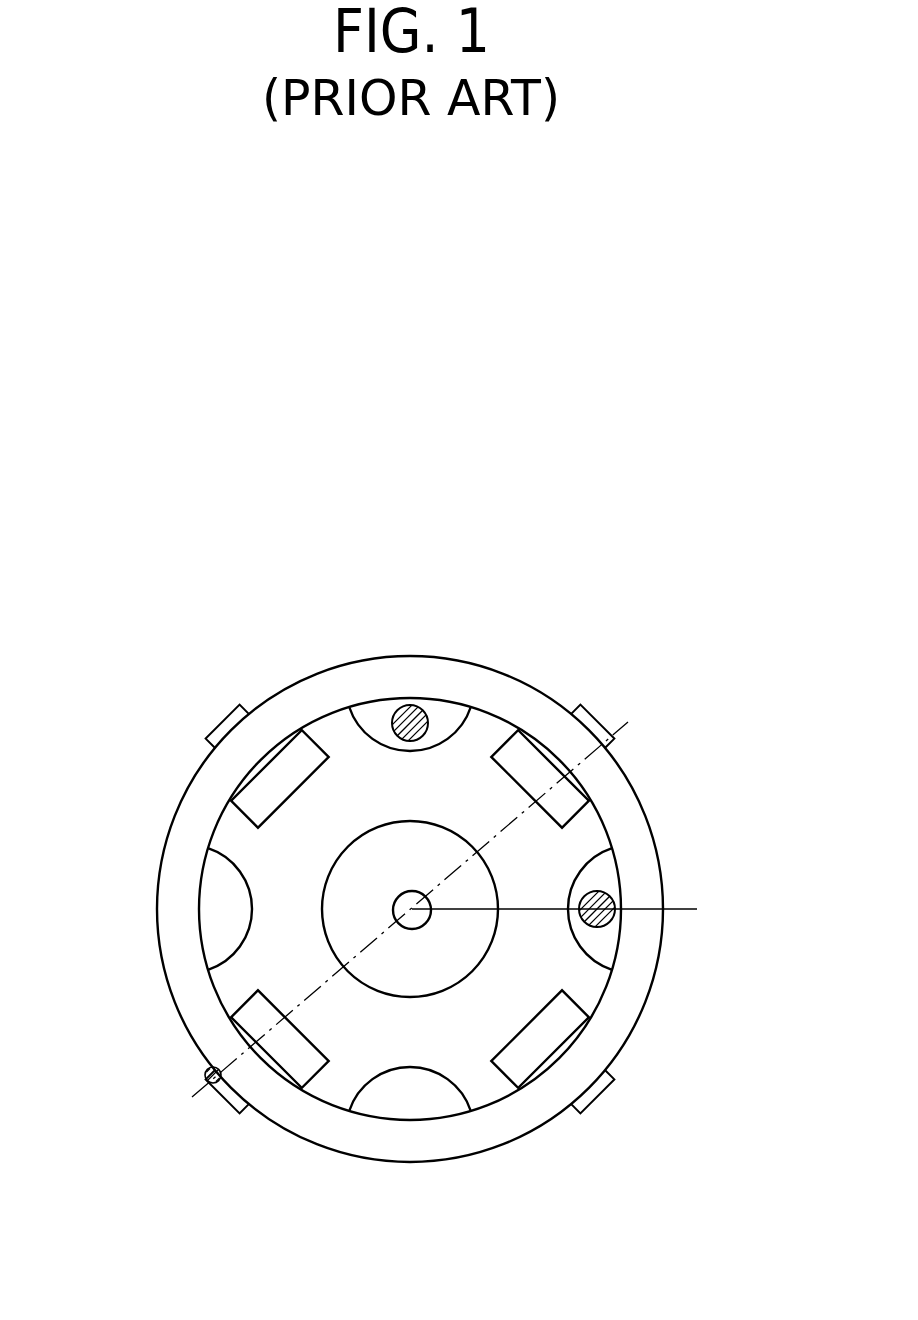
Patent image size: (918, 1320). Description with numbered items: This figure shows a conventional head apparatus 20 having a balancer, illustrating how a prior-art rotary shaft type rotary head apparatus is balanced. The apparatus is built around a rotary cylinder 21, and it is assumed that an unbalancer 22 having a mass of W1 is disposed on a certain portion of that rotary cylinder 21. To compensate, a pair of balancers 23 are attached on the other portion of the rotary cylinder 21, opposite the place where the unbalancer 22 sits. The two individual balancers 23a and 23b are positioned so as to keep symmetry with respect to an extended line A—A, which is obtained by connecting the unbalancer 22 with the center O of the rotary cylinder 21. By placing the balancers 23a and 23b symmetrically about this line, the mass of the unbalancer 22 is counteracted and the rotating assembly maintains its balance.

The head apparatus 20 is at (272, 606).
The rotary cylinder 21 is at (190, 820).
The unbalancer 22 is at (205, 1074).
The pair of balancers 23 is at (805, 668).
The balancer 23a is at (420, 708).
The balancer 23b is at (603, 890).